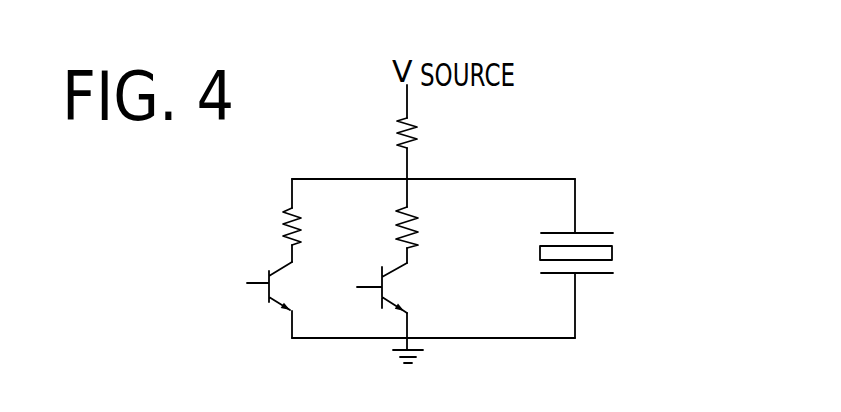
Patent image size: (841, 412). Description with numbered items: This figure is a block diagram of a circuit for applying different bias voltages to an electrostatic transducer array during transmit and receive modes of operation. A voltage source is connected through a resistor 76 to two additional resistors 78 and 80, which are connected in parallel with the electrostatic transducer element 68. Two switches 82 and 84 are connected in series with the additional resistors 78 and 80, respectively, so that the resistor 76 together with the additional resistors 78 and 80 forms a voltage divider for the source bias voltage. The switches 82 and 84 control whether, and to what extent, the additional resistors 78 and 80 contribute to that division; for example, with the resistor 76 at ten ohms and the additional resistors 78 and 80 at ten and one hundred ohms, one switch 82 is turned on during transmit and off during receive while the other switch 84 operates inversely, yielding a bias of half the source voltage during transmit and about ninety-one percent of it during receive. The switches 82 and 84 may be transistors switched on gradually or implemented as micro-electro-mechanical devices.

The electrostatic transducer element 68 is at (628, 245).
The resistor 76 is at (420, 141).
The additional resistor 78 is at (420, 228).
The additional resistor 80 is at (303, 222).
The switch 82 is at (405, 283).
The switch 84 is at (249, 255).